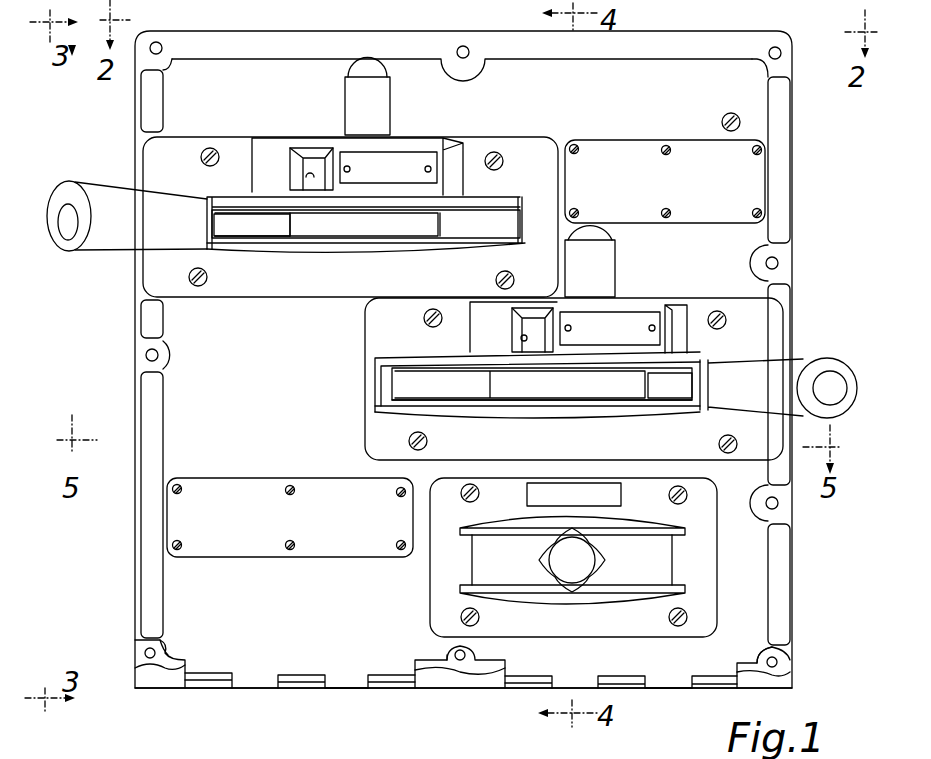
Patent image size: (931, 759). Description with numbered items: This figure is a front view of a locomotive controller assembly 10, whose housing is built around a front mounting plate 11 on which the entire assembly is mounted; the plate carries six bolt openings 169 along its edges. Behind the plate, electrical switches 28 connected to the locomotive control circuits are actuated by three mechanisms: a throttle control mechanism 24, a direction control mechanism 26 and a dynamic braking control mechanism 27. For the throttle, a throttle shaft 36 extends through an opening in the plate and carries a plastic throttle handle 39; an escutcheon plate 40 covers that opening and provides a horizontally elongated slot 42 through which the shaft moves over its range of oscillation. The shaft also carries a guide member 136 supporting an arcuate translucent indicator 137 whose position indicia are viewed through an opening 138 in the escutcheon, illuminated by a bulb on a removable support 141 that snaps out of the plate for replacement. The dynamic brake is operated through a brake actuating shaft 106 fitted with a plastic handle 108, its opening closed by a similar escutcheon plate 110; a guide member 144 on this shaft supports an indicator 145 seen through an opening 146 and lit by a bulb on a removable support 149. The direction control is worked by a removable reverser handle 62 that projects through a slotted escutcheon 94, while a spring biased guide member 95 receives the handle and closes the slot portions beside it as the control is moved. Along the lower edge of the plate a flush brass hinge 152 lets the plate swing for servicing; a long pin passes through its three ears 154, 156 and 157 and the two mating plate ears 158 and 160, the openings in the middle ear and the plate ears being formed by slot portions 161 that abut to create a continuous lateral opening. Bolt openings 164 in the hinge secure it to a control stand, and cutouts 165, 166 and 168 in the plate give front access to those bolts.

The controller assembly 10 is at (797, 163).
The front mounting plate 11 is at (760, 122).
The throttle control mechanism 24 is at (799, 325).
The direction control mechanism 26 is at (730, 552).
The dynamic braking control mechanism 27 is at (235, 300).
The electrical switches 28 is at (370, 723).
The throttle shaft 36 is at (663, 382).
The throttle handle 39 is at (805, 358).
The escutcheon plate 40 is at (697, 312).
The slot 42 is at (560, 396).
The reverser handle 62 is at (590, 566).
The slotted escutcheon 94 is at (710, 598).
The guide member 95 is at (663, 573).
The brake actuating shaft 106 is at (263, 225).
The handle 108 is at (98, 192).
The escutcheon plate 110 is at (230, 146).
The guide member 136 is at (525, 390).
The indicator 137 is at (545, 325).
The opening 138 is at (521, 338).
The support 141 is at (605, 253).
The guide member 144 is at (353, 228).
The indicator 145 is at (318, 162).
The opening 146 is at (308, 177).
The support 149 is at (382, 116).
The hinge 152 is at (135, 680).
The ear 154 is at (160, 682).
The ear 156 is at (465, 682).
The ear 157 is at (775, 691).
The ear 158 is at (350, 684).
The ear 160 is at (668, 685).
The slot portion 161 is at (284, 680).
The bolt openings 164 is at (147, 653).
The cutout 165 is at (167, 652).
The cutout 166 is at (452, 656).
The cutout 168 is at (786, 647).
The bolt openings 169 is at (158, 46).